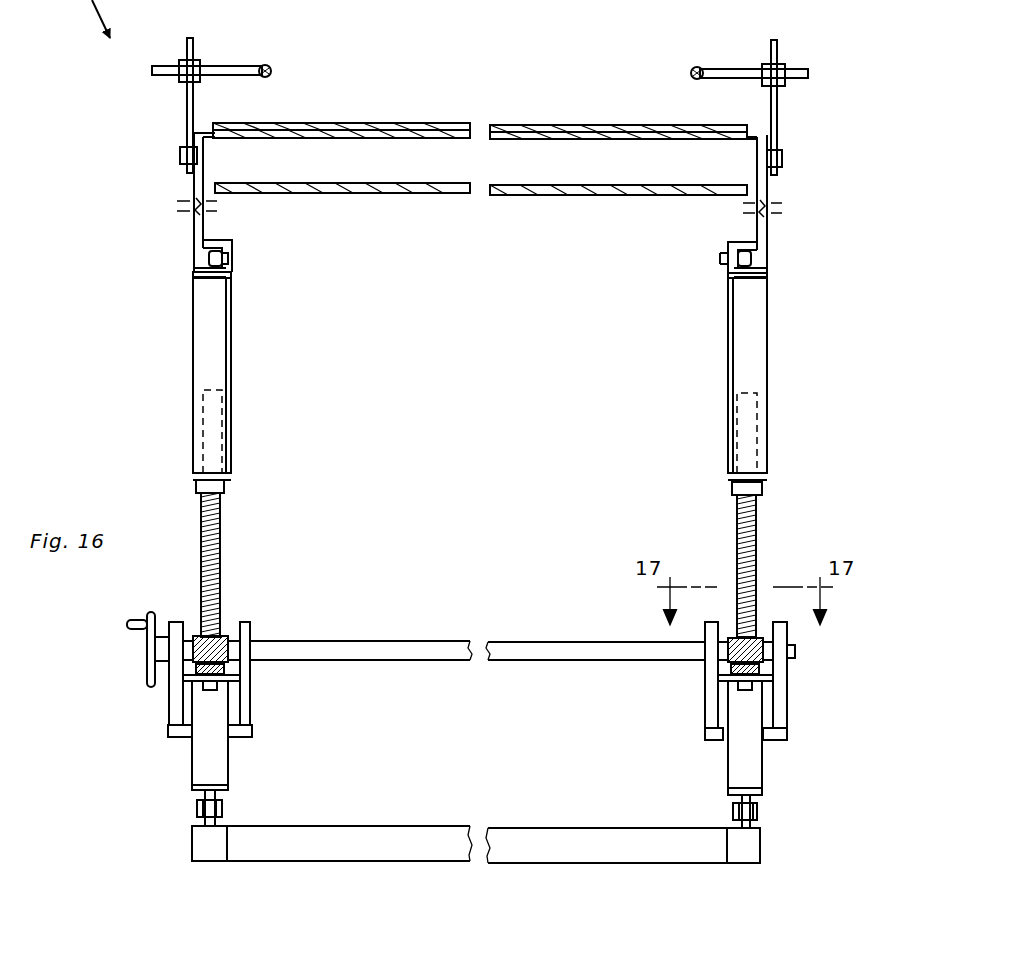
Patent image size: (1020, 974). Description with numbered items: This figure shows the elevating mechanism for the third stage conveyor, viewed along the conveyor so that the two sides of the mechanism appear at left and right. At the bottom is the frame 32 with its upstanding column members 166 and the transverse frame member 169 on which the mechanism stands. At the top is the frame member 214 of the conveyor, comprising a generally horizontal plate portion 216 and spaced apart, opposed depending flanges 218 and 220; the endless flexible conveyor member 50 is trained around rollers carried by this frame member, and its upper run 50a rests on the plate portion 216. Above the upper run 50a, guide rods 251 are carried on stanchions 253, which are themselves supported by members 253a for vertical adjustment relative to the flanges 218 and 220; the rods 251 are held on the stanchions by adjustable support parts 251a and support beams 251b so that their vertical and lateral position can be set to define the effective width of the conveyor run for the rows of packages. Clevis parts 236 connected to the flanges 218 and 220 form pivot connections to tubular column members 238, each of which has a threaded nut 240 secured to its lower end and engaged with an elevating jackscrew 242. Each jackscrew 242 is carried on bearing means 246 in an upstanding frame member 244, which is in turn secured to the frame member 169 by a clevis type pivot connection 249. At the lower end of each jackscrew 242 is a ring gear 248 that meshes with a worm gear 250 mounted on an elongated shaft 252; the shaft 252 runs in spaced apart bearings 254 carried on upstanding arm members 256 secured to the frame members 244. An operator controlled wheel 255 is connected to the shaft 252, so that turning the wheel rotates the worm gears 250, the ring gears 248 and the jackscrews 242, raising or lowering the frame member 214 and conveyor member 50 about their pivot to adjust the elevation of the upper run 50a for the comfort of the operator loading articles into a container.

The frame 32 is at (565, 868).
The endless flexible conveyor member 50 is at (395, 195).
The upper run 50a is at (418, 123).
The upstanding column members 166 is at (540, 828).
The transverse frame member 169 is at (192, 842).
The frame member 214 is at (545, 125).
The horizontal plate portion 216 is at (365, 138).
The depending flange 218 is at (193, 222).
The depending flange 220 is at (770, 224).
The clevis parts 236 is at (228, 258).
The tubular column members 238 is at (232, 348).
The threaded nut 240 is at (232, 485).
The elevating jackscrew 242 is at (222, 540).
The upstanding frame member 244 is at (232, 758).
The bearing means 246 is at (240, 684).
The ring gear 248 is at (192, 632).
The clevis type pivot connection 249 is at (224, 806).
The worm gear 250 is at (228, 640).
The guide members 251 is at (272, 68).
The adjustable support parts 251a is at (196, 56).
The support beams 251b is at (216, 78).
The elongated shaft 252 is at (572, 662).
The stanchions 253 is at (183, 106).
The support members 253a is at (180, 158).
The bearings 254 is at (252, 636).
The operator controlled wheel 255 is at (137, 645).
The upstanding arm members 256 is at (168, 698).